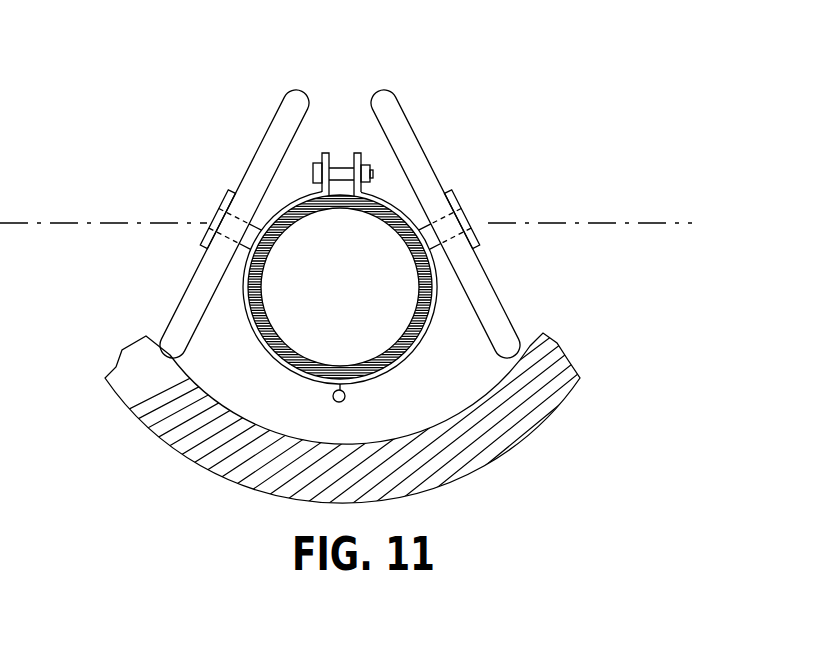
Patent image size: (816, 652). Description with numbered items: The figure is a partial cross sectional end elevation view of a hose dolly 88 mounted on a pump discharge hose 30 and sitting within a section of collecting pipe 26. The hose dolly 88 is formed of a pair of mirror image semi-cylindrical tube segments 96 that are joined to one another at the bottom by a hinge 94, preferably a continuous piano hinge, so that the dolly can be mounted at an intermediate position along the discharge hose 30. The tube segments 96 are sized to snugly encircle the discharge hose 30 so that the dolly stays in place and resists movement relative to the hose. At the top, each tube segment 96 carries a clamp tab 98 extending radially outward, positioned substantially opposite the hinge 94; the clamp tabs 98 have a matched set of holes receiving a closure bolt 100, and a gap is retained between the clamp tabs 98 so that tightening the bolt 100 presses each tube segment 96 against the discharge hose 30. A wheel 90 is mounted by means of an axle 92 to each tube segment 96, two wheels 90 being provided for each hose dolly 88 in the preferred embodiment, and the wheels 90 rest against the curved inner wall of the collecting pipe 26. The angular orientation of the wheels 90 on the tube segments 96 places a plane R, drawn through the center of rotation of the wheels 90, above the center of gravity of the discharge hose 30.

The collecting pipe 26 is at (512, 423).
The discharge hose 30 is at (433, 313).
The hose dolly 88 is at (338, 226).
The wheel 90 is at (201, 259).
The axle 92 is at (212, 223).
The hinge 94 is at (345, 399).
The semi-cylindrical tube segment 96 is at (262, 340).
The clamp tab 98 is at (326, 153).
The closure bolt 100 is at (339, 165).
The plane R is at (560, 223).